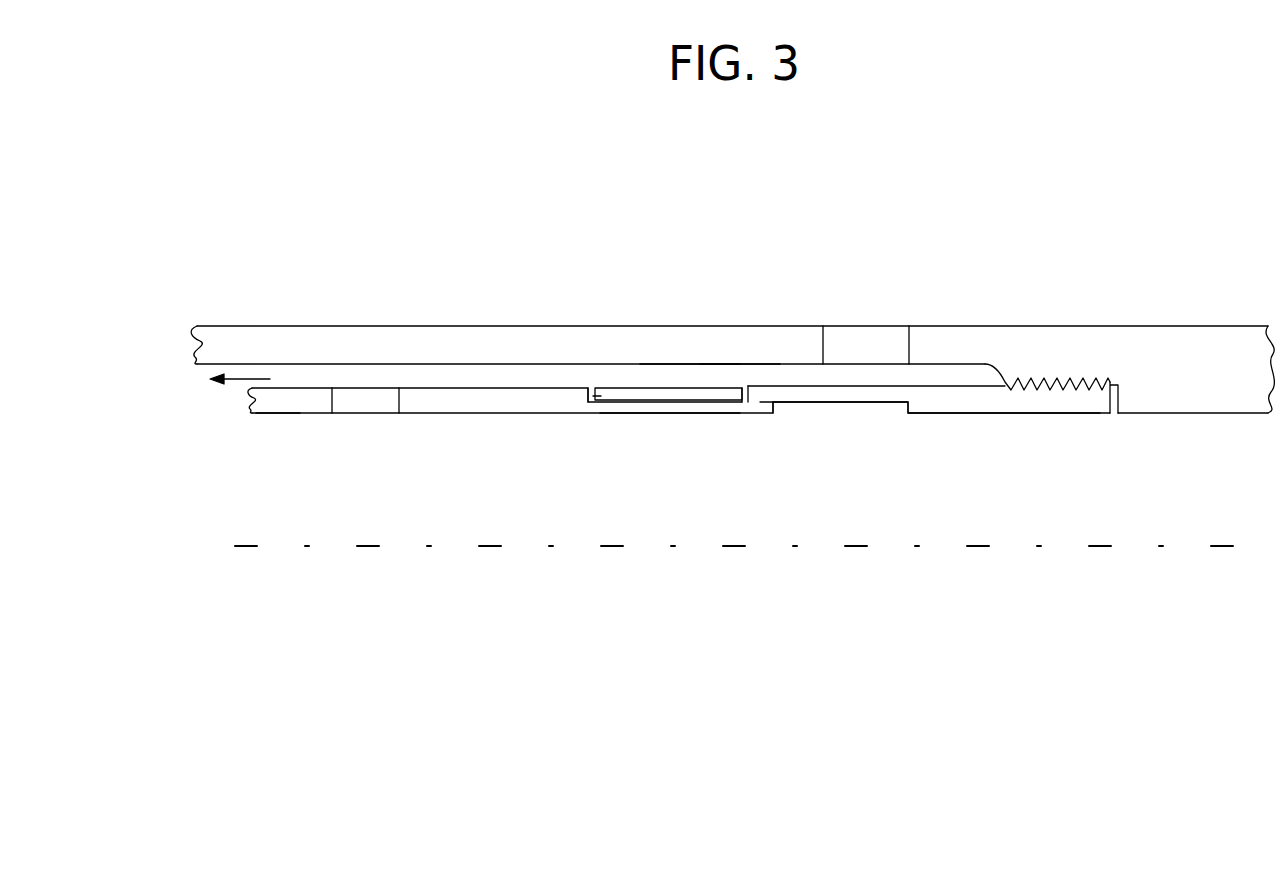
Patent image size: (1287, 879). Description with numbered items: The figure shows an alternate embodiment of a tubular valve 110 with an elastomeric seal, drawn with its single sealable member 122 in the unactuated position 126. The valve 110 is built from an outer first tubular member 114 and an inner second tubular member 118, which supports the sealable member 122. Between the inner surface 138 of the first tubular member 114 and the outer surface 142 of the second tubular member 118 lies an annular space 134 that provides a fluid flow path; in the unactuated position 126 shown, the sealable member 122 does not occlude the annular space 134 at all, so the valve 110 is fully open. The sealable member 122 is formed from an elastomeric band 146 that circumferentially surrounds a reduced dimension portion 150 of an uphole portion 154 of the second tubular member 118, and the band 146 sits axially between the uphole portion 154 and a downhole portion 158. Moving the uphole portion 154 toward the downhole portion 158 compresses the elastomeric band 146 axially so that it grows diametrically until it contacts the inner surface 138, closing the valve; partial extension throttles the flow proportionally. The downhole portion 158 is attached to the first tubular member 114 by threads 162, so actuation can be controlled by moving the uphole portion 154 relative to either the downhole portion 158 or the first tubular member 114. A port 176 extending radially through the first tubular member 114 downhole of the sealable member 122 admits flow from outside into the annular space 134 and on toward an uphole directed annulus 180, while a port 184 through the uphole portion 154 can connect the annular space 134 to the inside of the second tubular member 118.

The tubular valve 110 is at (1036, 186).
The first tubular member 114 is at (1126, 324).
The second tubular member 118 is at (475, 417).
The sealable member 122 is at (625, 398).
The unactuated position 126 is at (724, 410).
The annular space 134 is at (728, 374).
The inner surface 138 is at (687, 374).
The outer surface 142 is at (777, 379).
The elastomeric band 146 is at (596, 396).
The reduced dimension portion 150 is at (670, 411).
The uphole portion 154 is at (283, 416).
The downhole portion 158 is at (953, 413).
The threads 162 is at (1082, 385).
The port 176 is at (914, 346).
The uphole directed annulus 180 is at (243, 377).
The port 184 is at (331, 398).